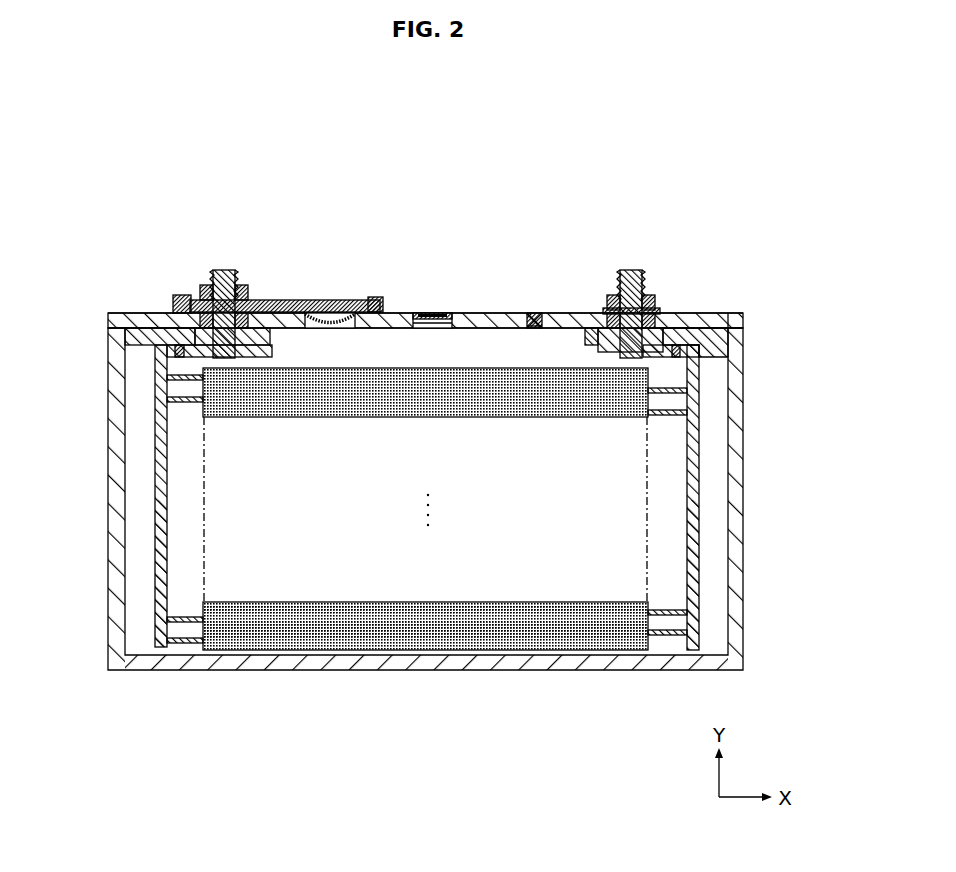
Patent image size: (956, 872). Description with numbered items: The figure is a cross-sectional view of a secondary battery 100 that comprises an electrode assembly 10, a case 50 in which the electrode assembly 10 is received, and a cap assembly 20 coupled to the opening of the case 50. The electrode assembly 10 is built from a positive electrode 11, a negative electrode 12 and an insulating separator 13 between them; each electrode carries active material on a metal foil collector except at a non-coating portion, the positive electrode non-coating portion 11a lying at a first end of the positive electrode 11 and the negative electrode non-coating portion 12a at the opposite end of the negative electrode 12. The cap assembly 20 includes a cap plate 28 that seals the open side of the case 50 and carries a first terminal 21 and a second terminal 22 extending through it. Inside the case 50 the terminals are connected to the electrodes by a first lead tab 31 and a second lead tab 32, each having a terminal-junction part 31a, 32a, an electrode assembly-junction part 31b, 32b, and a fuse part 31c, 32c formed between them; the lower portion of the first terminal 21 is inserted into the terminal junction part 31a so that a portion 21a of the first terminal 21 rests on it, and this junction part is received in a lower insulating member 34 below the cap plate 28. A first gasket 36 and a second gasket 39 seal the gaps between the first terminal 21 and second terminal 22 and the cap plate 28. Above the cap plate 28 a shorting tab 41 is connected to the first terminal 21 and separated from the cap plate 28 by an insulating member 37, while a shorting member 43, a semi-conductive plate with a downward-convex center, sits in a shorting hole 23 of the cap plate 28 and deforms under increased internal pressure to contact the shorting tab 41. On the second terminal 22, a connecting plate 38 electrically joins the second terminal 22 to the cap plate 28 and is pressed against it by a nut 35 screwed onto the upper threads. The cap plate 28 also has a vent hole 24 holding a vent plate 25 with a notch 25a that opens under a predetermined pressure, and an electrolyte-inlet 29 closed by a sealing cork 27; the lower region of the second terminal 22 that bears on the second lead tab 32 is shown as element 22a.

The secondary battery 100 is at (712, 196).
The electrode assembly 10 is at (510, 657).
The positive electrode 11 is at (312, 650).
The positive electrode non-coating portion 11a is at (188, 648).
The negative electrode 12 is at (578, 652).
The negative electrode non-coating portion 12a is at (668, 640).
The separator 13 is at (443, 648).
The cap assembly 20 is at (483, 311).
The first terminal 21 is at (222, 268).
The portion of the first terminal 21a is at (272, 342).
The second terminal 22 is at (631, 268).
The second terminal base (flange) 22a is at (592, 345).
The shorting hole 23 is at (345, 330).
The vent hole 24 is at (428, 330).
The vent plate 25 is at (450, 313).
The notch 25a is at (425, 313).
The sealing cork 27 is at (531, 313).
The cap plate 28 is at (728, 315).
The electrolyte-inlet 29 is at (535, 330).
The first lead tab 31 is at (148, 453).
The first terminal-junction part 31a is at (176, 357).
The first electrode assembly-junction part 31b is at (155, 520).
The first fuse part 31c is at (178, 345).
The second lead tab 32 is at (707, 456).
The second terminal-junction part 32a is at (665, 358).
The second electrode assembly-junction part 32b is at (700, 512).
The second fuse part 32c is at (688, 328).
The lower insulating member 34 is at (140, 340).
The nut 35 is at (240, 285).
The first gasket 36 is at (188, 295).
The insulating member 37 is at (374, 297).
The connecting plate 38 is at (659, 308).
The second gasket 39 is at (594, 332).
The shorting tab 41 is at (282, 300).
The shorting member 43 is at (333, 318).
The case 50 is at (745, 411).